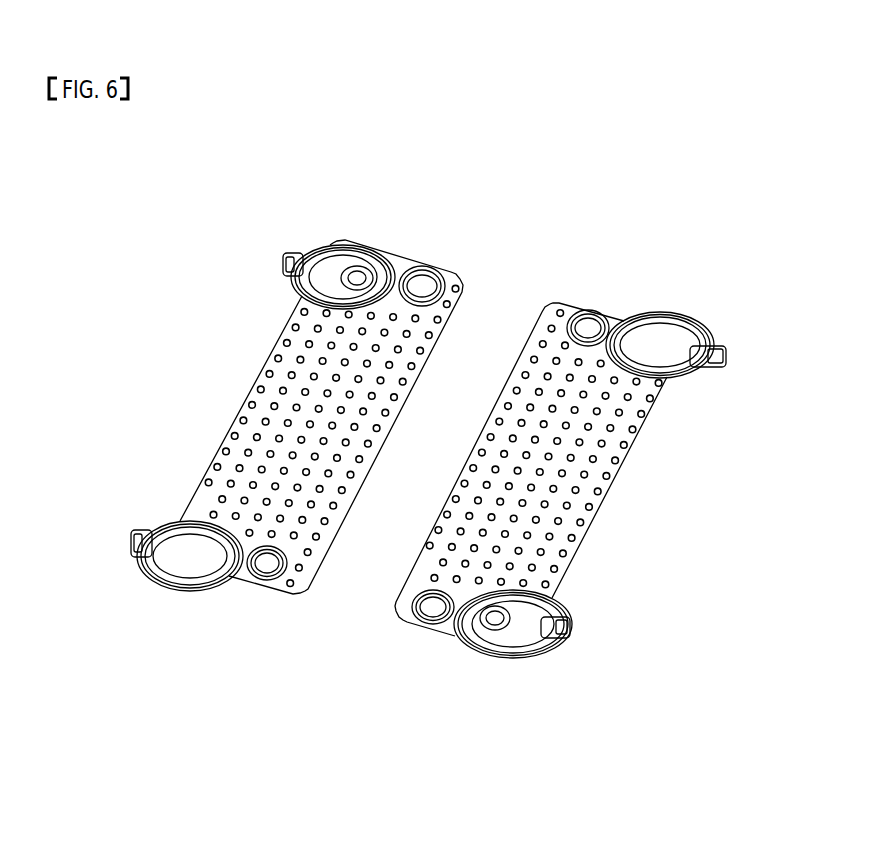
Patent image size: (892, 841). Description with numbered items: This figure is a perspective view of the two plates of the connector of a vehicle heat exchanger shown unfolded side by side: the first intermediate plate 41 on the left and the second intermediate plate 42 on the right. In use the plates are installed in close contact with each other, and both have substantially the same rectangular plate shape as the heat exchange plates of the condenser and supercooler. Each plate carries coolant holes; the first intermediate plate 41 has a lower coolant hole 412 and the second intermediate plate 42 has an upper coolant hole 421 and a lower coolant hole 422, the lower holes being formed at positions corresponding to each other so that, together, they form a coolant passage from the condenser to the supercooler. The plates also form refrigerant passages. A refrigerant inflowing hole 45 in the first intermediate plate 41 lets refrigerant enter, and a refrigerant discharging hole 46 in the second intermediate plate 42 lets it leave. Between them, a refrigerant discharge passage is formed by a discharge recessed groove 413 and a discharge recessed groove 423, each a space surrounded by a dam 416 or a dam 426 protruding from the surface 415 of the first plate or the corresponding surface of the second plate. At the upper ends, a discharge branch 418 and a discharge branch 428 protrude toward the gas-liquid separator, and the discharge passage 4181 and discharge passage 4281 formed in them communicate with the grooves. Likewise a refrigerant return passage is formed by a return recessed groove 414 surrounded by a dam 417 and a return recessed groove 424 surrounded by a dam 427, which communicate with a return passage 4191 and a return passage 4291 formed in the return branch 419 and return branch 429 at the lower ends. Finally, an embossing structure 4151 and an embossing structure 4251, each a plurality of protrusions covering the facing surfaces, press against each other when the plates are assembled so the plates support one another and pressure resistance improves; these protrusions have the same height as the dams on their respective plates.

The first intermediate plate 41 is at (232, 324).
The coolant hole 412 is at (265, 563).
The discharge recessed groove 413 is at (330, 267).
The return recessed groove 414 is at (180, 542).
The surface 415 is at (407, 257).
The embossing structure 4151 is at (248, 450).
The dam 416 is at (383, 250).
The dam 417 is at (185, 582).
The discharge branch 418 is at (297, 256).
The discharge passage 4181 is at (290, 263).
The return branch 419 is at (136, 549).
The return passage 4191 is at (137, 540).
The refrigerant inflowing hole 45 is at (357, 277).
The second intermediate plate 42 is at (650, 496).
The coolant hole 421 is at (582, 330).
The coolant hole 422 is at (430, 608).
The discharge recessed groove 423 is at (655, 340).
The return recessed groove 424 is at (530, 617).
The embossing structure 4251 is at (529, 407).
The dam 426 is at (620, 323).
The dam 427 is at (500, 652).
The discharge branch 428 is at (700, 366).
The discharge passage 4281 is at (724, 358).
The return branch 429 is at (571, 630).
The return passage 4291 is at (568, 632).
The refrigerant discharging hole 46 is at (495, 633).